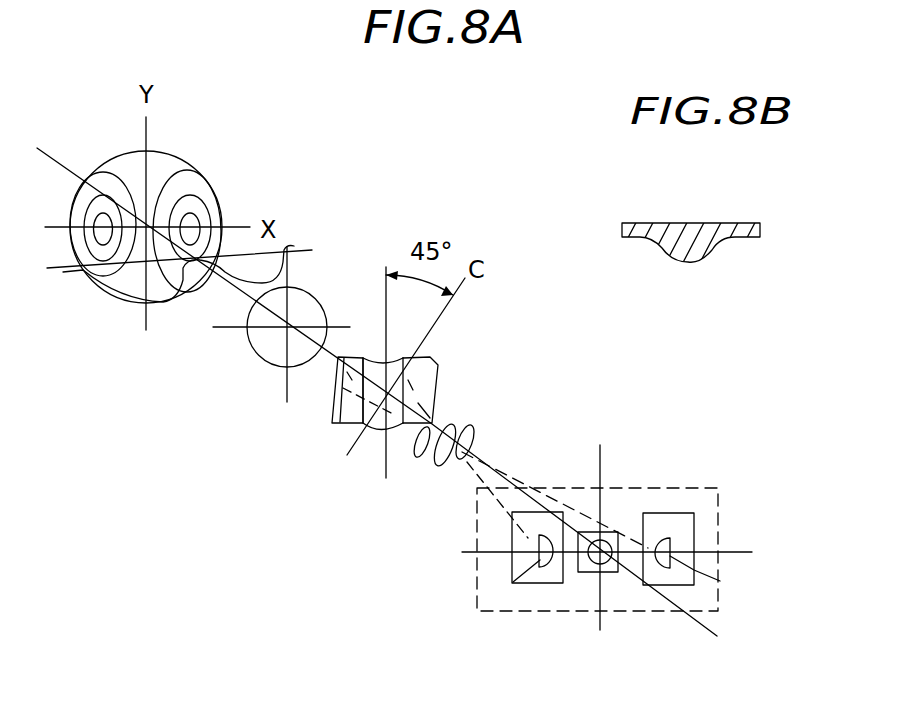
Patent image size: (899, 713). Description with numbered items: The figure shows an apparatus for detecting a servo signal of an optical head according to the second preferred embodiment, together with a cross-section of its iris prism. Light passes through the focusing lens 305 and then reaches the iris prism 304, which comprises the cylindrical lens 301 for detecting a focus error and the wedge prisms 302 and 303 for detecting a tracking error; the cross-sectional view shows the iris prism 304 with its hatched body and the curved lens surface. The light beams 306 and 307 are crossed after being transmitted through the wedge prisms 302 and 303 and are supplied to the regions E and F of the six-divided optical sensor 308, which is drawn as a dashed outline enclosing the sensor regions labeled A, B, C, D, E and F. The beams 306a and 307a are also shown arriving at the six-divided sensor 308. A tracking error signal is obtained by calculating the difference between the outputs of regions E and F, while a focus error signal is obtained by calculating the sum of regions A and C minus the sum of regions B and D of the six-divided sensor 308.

In FIG. 8A, the cylindrical lens 301 is at (378, 431).
In FIG. 8A, the prism 302 is at (328, 418).
In FIG. 8A, the prism 303 is at (432, 382).
In FIG. 8B, the iris prism 304 is at (680, 223).
In FIG. 8A, the focusing lens 305 is at (268, 361).
In FIG. 8A, the beam 306 is at (540, 492).
In FIG. 8A, the beam 306a is at (720, 581).
In FIG. 8A, the beam 307 is at (498, 503).
In FIG. 8A, the beam 307a is at (513, 582).
In FIG. 8A, the six-divided optical sensor 308 is at (647, 488).